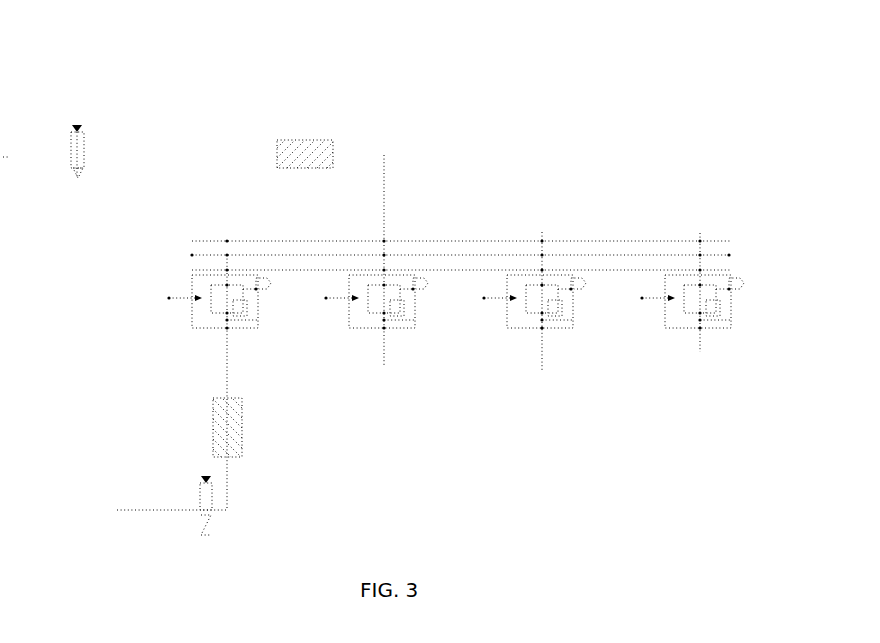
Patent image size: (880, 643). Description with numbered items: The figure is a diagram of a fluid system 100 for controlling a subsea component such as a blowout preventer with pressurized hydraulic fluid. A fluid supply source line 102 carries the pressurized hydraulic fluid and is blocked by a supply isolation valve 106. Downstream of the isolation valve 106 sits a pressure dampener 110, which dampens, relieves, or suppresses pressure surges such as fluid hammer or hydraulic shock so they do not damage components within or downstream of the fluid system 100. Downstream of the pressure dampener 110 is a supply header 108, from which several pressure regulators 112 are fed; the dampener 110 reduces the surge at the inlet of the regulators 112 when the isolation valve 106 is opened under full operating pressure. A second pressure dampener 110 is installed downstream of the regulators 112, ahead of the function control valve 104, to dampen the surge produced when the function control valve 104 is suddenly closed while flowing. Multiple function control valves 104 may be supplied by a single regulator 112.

The fluid system 100 is at (560, 96).
The fluid supply source line 102 is at (24, 155).
The function control valve 104 is at (196, 489).
The supply isolation valve 106 is at (87, 135).
The supply header 108 is at (728, 241).
The pressure dampener 110 is at (334, 139).
The pressure regulator 112 is at (206, 282).